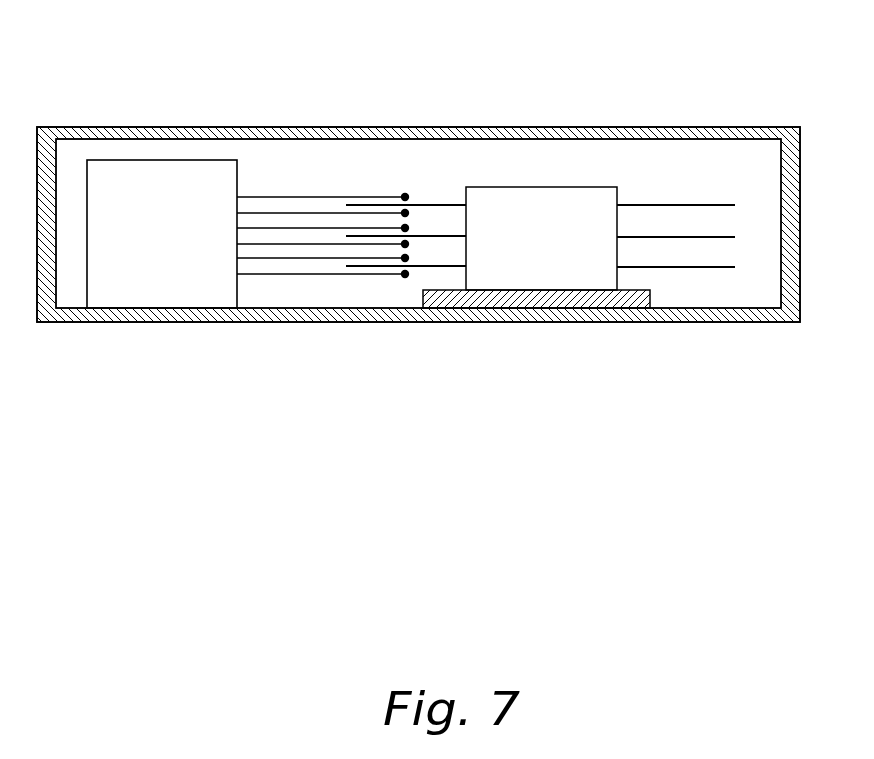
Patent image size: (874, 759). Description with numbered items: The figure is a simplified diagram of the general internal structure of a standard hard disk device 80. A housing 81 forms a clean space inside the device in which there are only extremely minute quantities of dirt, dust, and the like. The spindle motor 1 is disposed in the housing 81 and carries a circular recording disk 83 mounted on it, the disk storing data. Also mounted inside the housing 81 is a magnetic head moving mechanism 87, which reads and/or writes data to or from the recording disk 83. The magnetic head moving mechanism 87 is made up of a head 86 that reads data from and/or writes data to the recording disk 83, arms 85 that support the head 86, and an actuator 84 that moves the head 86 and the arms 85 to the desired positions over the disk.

The hard disk device 80 is at (398, 51).
The housing 81 is at (585, 127).
The magnetic head moving mechanism 87 is at (245, 155).
The actuator 84 is at (130, 178).
The arms 85 is at (292, 212).
The head 86 is at (412, 213).
The spindle motor 1 is at (533, 210).
The recording disk 83 is at (678, 237).